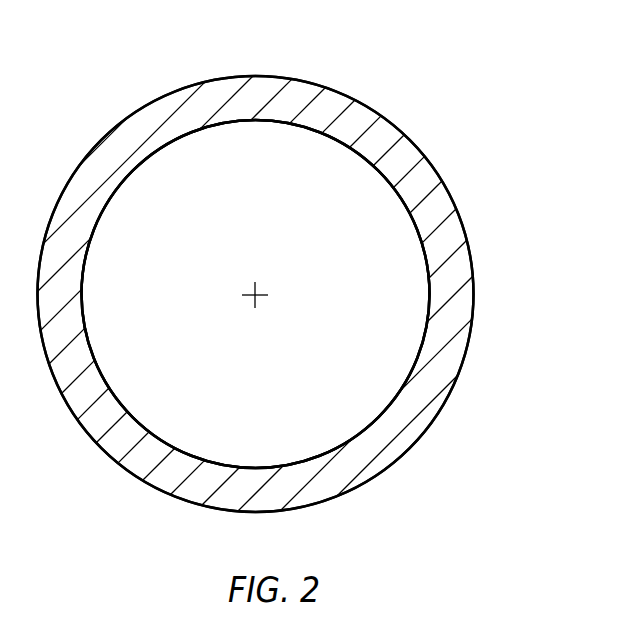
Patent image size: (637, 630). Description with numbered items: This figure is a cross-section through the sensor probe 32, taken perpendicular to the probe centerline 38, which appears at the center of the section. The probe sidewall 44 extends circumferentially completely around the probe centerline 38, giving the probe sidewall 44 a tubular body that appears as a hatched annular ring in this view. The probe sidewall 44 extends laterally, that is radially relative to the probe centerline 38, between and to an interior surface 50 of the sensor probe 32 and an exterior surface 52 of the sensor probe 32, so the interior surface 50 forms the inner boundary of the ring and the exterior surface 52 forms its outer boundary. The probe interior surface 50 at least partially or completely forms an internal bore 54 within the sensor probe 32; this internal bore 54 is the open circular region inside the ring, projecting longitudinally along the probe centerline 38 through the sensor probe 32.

The sensor probe 32 is at (447, 110).
The probe centerline 38 is at (257, 297).
The probe sidewall 44 is at (475, 254).
The interior surface 50 is at (302, 128).
The exterior surface 52 is at (303, 78).
The internal bore 54 is at (165, 315).